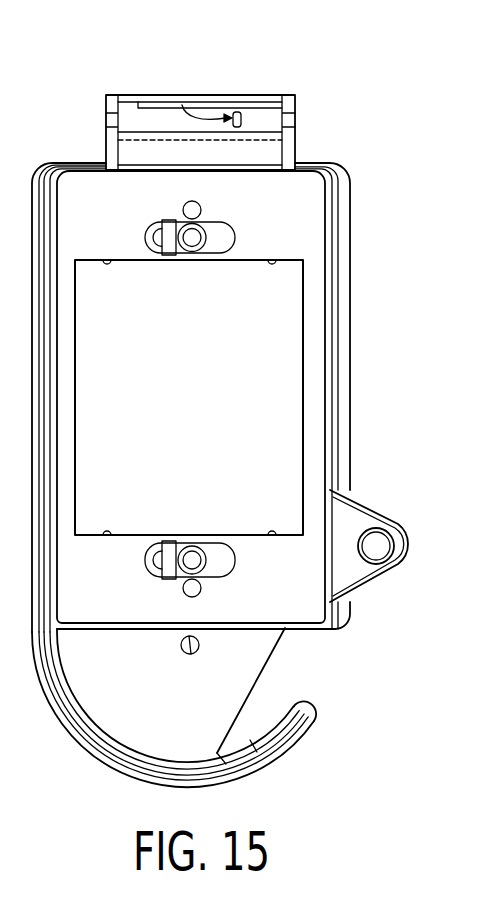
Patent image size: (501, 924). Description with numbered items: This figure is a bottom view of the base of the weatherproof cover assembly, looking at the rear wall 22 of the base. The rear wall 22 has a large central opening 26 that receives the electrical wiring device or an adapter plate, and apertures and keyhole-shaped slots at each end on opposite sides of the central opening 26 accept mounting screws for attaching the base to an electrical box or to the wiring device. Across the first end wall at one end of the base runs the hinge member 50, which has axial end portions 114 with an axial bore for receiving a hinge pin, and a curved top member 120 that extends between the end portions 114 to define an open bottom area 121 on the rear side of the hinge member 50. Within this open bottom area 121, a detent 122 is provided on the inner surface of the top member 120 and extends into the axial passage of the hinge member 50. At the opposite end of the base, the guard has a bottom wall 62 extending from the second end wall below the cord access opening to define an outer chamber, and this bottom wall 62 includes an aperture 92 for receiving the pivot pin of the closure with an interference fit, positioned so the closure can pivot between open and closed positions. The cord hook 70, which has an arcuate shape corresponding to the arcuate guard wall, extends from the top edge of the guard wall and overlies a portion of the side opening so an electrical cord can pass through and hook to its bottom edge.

The rear wall 22 is at (312, 220).
The central opening 26 is at (76, 432).
The hinge member 50 is at (300, 93).
The bottom wall 62 is at (223, 688).
The cord hook 70 is at (258, 770).
The aperture 92 is at (196, 653).
The axial end portions 114 is at (105, 143).
The curved top member 120 is at (243, 95).
The open bottom area 121 is at (163, 122).
The detent 122 is at (182, 105).